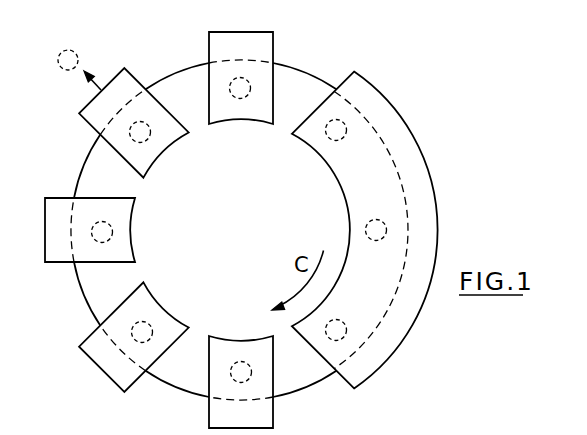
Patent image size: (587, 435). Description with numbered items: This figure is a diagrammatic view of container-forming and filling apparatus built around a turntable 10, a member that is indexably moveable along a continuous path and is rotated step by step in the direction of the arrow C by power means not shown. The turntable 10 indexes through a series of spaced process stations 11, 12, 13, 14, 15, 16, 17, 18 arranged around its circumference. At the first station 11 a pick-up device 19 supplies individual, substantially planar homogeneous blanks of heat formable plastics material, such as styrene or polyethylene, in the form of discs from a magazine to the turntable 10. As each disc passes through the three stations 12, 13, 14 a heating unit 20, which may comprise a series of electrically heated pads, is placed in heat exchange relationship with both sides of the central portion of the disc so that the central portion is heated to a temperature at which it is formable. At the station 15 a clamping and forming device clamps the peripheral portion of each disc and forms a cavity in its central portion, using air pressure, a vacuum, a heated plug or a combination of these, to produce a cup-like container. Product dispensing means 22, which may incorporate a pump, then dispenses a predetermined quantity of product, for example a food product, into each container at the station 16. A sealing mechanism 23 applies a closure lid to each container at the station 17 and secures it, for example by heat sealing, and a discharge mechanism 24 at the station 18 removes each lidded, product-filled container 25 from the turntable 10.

The turntable 10 is at (182, 67).
The process station 11 is at (240, 98).
The process station 12 is at (327, 136).
The process station 13 is at (366, 228).
The process station 14 is at (346, 334).
The process station 15 is at (241, 361).
The process station 16 is at (150, 324).
The process station 17 is at (112, 232).
The process station 18 is at (148, 139).
The pick-up device 19 is at (273, 37).
The heating unit 20 is at (383, 96).
The product dispensing means 22 is at (100, 373).
The sealing mechanism 23 is at (46, 229).
The discharge mechanism 24 is at (127, 68).
The product-filled container 25 is at (76, 51).